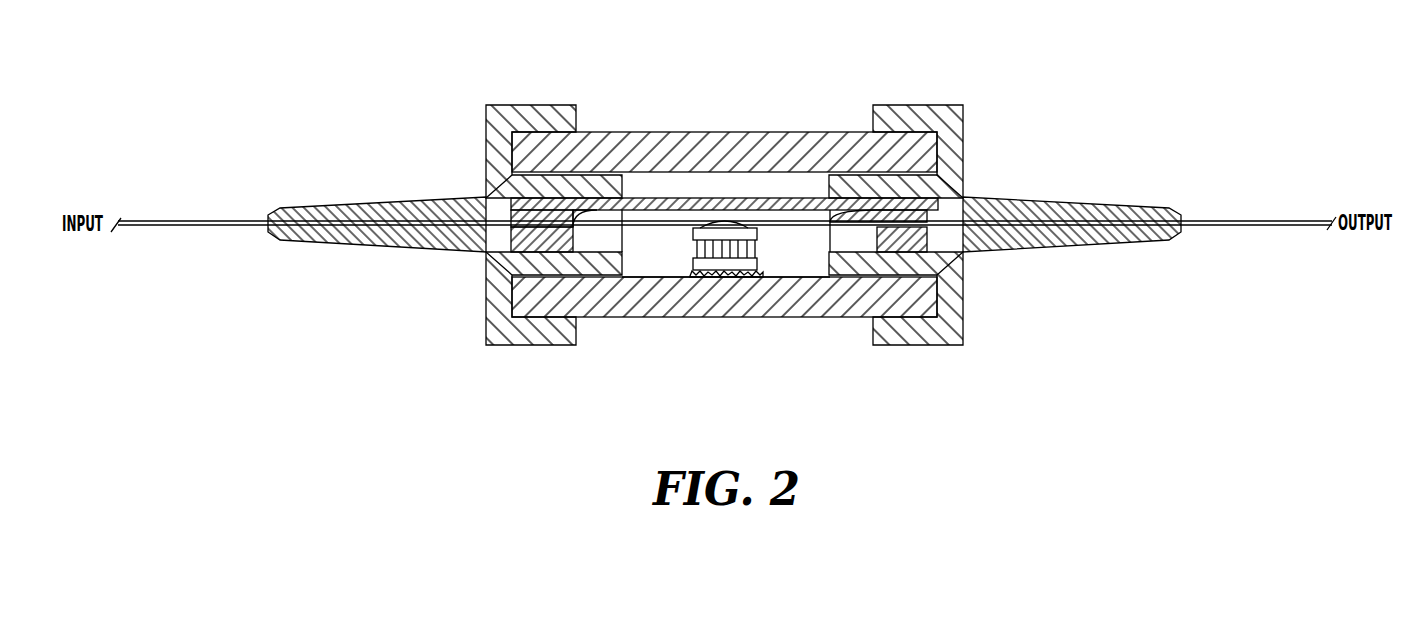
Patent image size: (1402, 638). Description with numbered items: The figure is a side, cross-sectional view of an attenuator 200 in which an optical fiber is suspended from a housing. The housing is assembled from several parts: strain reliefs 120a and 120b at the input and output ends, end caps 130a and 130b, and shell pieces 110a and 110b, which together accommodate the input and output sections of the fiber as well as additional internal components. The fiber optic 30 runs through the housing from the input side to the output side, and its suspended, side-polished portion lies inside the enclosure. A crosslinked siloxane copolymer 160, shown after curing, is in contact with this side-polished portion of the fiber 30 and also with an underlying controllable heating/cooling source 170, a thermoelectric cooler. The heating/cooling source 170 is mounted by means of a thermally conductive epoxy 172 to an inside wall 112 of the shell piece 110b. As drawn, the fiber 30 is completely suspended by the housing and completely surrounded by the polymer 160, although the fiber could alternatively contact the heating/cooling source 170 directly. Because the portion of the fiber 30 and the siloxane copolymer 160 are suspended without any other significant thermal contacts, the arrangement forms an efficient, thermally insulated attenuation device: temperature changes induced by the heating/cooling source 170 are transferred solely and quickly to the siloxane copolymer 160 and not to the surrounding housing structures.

The attenuator 200 is at (1148, 130).
The shell piece 110a is at (832, 145).
The shell piece 110b is at (841, 298).
The end cap 130a is at (528, 122).
The end cap 130b is at (918, 122).
The inside wall 112 is at (640, 272).
The strain relief 120a is at (383, 204).
The strain relief 120b is at (1052, 204).
The fiber optic 30 is at (1243, 222).
The crosslinked siloxane copolymer 160 is at (725, 221).
The controllable heating/cooling source 170 is at (752, 265).
The thermally conductive epoxy 172 is at (687, 273).